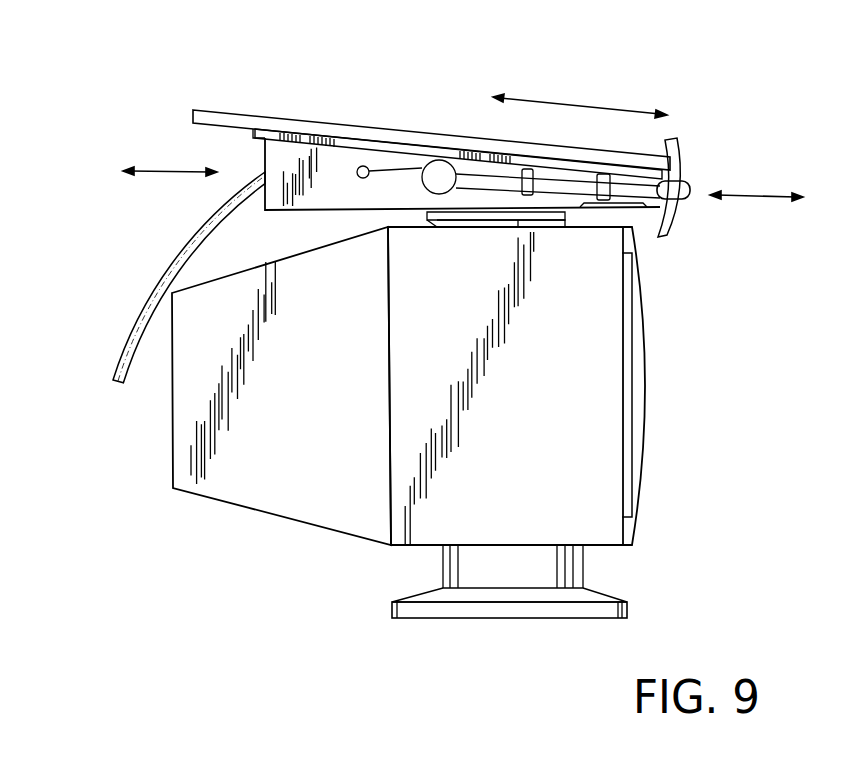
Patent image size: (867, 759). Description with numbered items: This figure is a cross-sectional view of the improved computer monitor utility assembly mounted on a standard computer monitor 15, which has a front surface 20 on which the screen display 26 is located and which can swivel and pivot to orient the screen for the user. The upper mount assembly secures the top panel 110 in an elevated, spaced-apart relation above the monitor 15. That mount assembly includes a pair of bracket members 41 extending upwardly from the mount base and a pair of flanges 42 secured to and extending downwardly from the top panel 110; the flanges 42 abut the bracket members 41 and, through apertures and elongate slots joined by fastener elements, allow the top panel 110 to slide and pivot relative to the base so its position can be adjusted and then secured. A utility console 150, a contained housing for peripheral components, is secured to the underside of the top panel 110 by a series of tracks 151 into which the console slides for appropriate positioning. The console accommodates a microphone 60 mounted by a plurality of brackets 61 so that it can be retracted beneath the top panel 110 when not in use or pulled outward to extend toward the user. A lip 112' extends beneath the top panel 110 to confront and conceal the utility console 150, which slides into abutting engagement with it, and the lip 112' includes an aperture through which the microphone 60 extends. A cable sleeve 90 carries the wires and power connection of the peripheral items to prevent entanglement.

The computer monitor 15 is at (280, 484).
The front surface 20 is at (633, 533).
The screen display 26 is at (645, 362).
The bracket members 41 is at (477, 223).
The flanges 42 is at (432, 217).
The microphone 60 is at (690, 185).
The brackets 61 is at (528, 195).
The cable sleeve 90 is at (133, 340).
The top panel 110 is at (445, 133).
The lip 112' is at (710, 164).
The utility console 150 is at (278, 157).
The tracks 151 is at (367, 143).